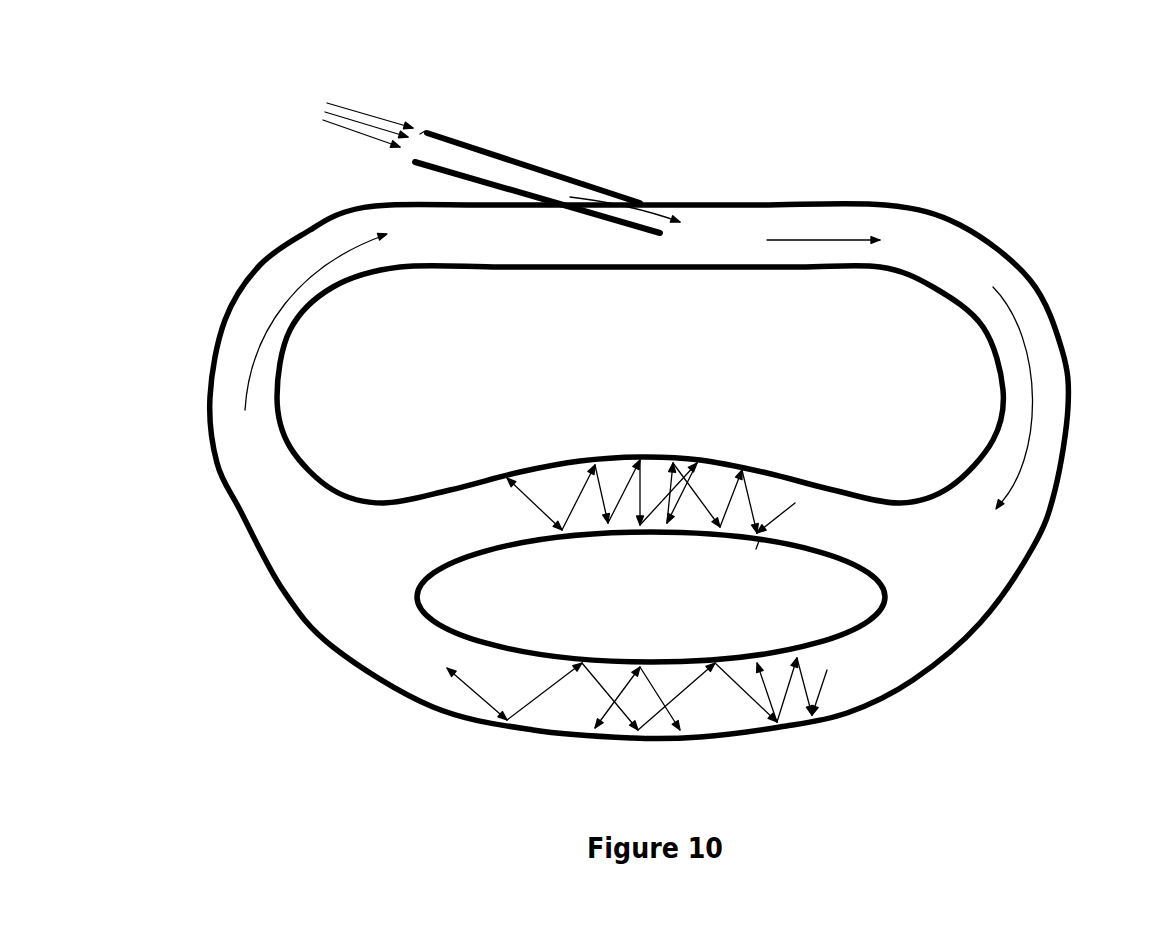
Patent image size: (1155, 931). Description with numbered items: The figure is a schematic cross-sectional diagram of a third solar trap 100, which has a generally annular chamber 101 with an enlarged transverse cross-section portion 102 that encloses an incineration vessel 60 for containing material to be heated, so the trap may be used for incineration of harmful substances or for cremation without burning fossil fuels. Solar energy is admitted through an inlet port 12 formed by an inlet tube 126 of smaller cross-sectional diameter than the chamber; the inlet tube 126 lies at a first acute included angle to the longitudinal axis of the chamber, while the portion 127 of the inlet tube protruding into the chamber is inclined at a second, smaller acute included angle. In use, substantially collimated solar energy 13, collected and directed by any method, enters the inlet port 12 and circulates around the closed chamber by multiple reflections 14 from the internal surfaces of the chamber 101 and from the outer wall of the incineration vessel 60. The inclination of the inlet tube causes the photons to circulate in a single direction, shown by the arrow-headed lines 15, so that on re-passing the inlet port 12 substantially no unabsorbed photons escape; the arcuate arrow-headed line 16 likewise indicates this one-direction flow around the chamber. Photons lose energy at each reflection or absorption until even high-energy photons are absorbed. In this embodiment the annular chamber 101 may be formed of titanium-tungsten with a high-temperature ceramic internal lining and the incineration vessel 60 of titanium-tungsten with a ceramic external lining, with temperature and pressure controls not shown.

The third solar trap 100 is at (655, 461).
The annular chamber 101 is at (232, 515).
The enlarged transverse cross-section portion 102 is at (627, 455).
The incineration vessel 60 is at (413, 598).
The inlet tube 126 is at (520, 153).
The portion of the inlet tube 127 is at (633, 233).
The inlet port 12 is at (419, 130).
The collimated solar energy 13 is at (310, 103).
The arrow-headed lines 15 is at (827, 228).
The arcuate arrow-headed line 16 is at (280, 290).
The multiple reflections 14 is at (740, 470).